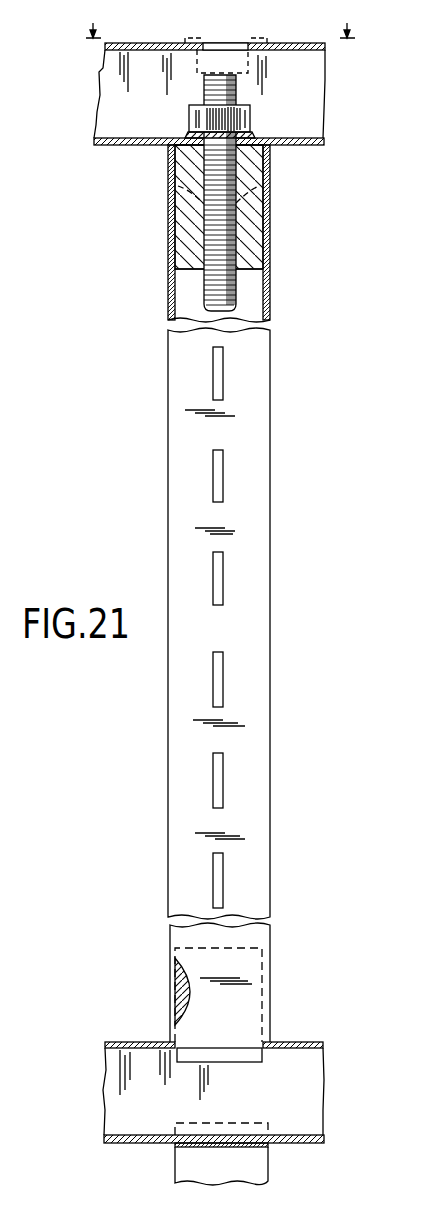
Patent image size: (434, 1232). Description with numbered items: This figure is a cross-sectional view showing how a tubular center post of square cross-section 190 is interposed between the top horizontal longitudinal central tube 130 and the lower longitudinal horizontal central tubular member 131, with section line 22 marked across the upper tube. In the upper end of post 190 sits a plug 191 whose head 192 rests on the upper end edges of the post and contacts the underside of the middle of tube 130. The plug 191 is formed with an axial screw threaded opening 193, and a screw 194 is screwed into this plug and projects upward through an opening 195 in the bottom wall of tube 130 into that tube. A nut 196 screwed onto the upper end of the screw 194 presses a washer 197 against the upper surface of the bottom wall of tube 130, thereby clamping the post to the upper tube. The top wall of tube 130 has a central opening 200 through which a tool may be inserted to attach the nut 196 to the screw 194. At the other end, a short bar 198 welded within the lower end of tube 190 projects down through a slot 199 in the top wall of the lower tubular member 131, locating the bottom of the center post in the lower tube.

The section line 22- 22 is at (223, 29).
The top horizontal longitudinal central tube 130 is at (306, 145).
The lower longitudinal horizontal central tubular member 131 is at (303, 1042).
The tubular center post 190 is at (258, 488).
The plug 191 is at (185, 210).
The head 192 is at (182, 150).
The axial screw threaded opening 193 is at (237, 248).
The screw 194 is at (215, 242).
The opening 195 is at (202, 155).
The nut 196 is at (243, 117).
The washer 197 is at (253, 136).
The short bar 198 is at (187, 988).
The slot 199 is at (264, 1050).
The central opening 200 is at (232, 36).